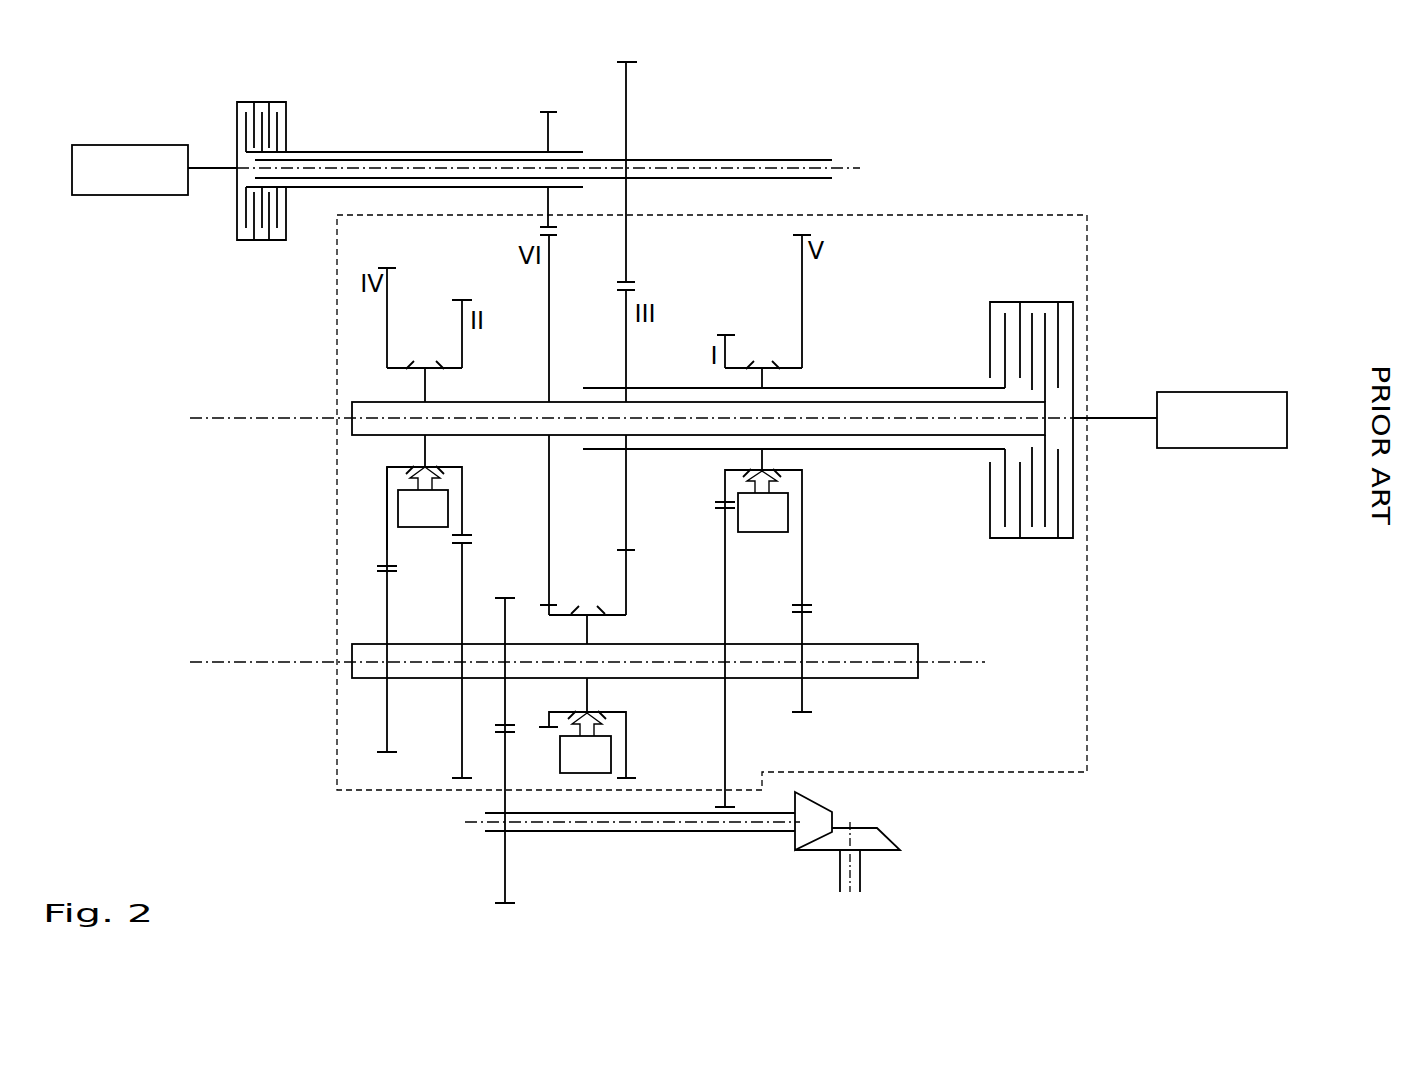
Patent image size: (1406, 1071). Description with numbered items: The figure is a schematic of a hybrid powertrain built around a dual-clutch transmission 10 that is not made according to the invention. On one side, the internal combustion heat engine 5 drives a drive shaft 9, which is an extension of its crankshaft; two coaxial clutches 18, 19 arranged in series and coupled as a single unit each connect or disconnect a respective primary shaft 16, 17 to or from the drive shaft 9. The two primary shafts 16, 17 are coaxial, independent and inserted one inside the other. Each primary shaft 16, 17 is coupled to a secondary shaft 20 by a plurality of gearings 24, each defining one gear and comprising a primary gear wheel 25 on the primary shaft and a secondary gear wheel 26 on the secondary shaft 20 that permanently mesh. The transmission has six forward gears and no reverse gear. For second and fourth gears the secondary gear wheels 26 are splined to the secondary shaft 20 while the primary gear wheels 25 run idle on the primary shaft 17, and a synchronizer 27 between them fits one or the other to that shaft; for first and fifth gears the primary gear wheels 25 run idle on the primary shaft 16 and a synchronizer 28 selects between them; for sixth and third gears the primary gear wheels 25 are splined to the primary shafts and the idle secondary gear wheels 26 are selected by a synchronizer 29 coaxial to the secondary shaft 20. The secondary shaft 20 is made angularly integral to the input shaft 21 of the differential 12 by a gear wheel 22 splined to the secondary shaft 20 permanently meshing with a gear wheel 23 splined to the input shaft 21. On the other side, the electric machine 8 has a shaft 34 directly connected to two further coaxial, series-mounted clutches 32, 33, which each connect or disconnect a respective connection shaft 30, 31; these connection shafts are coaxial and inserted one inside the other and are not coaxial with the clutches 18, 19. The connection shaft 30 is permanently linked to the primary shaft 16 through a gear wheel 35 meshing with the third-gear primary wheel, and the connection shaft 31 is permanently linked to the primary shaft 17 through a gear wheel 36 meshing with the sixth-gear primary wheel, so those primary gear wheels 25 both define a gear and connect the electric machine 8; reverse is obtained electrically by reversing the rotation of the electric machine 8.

The internal combustion heat engine 5 is at (1222, 420).
The electric machine 8 is at (130, 170).
The drive shaft 9 is at (1121, 410).
The dual-clutch transmission 10 is at (985, 190).
The differential 12 is at (905, 812).
The primary shaft 16 is at (912, 452).
The primary shaft 17 is at (492, 440).
The clutch 18 is at (1047, 560).
The clutch 19 is at (1031, 276).
The secondary shaft 20 is at (865, 680).
The input shaft 21 is at (692, 833).
The gear wheel 22 is at (504, 625).
The gear wheel 23 is at (507, 875).
The gearing 24 is at (355, 554).
The primary gear wheel 25 is at (387, 310).
The secondary gear wheel 26 is at (385, 600).
The synchronizer 27 is at (429, 492).
The synchronizer 28 is at (763, 628).
The synchronizer 29 is at (587, 728).
The connection shaft 30 is at (768, 160).
The connection shaft 31 is at (418, 150).
The clutch 32 is at (258, 258).
The clutch 33 is at (270, 86).
The shaft 34 is at (207, 163).
The gear wheel 35 is at (628, 95).
The gear wheel 36 is at (548, 131).